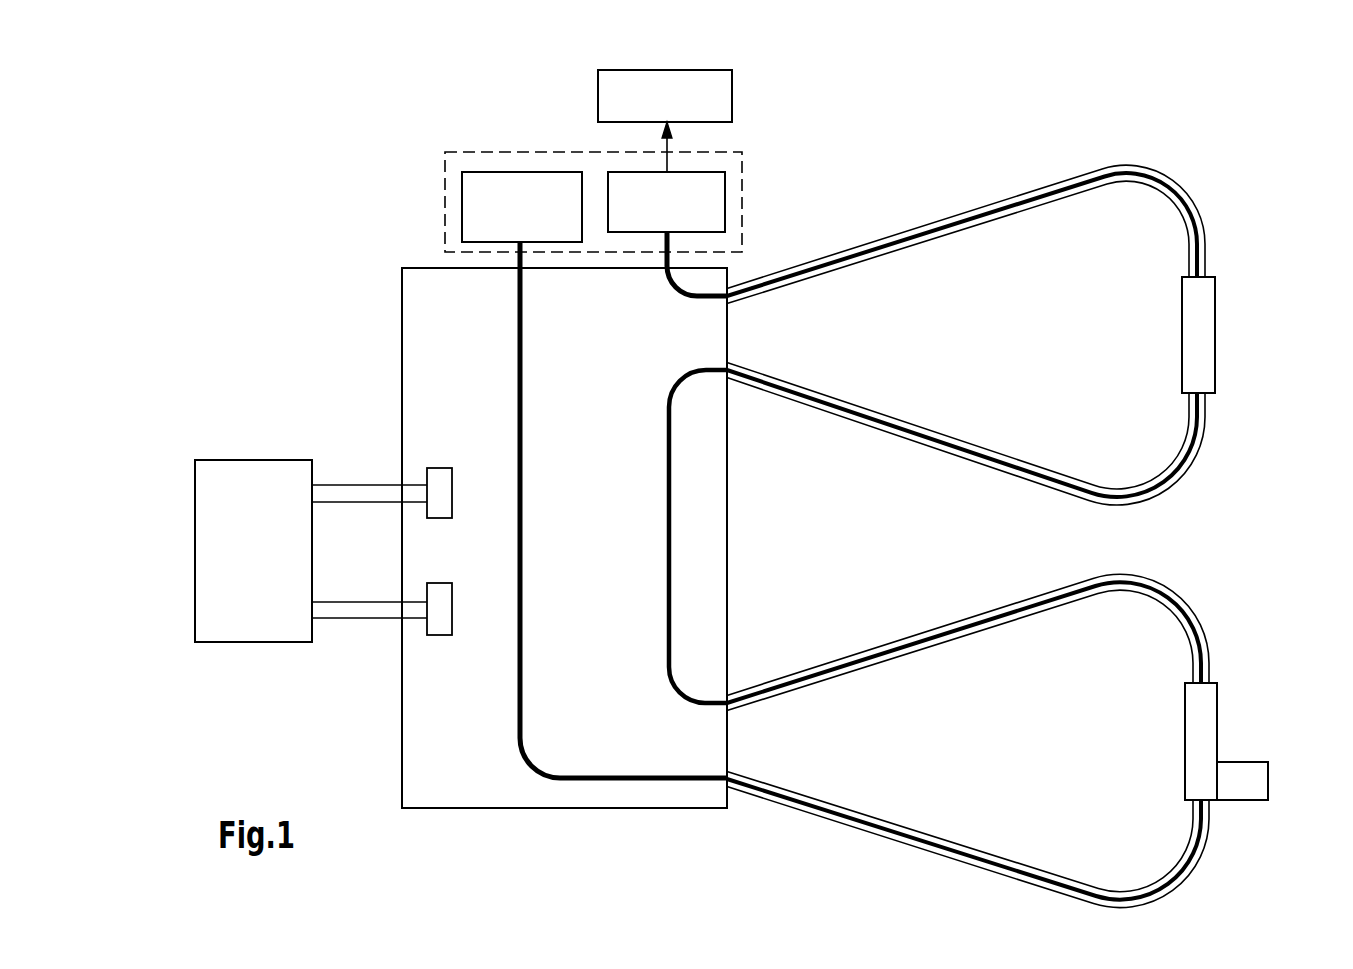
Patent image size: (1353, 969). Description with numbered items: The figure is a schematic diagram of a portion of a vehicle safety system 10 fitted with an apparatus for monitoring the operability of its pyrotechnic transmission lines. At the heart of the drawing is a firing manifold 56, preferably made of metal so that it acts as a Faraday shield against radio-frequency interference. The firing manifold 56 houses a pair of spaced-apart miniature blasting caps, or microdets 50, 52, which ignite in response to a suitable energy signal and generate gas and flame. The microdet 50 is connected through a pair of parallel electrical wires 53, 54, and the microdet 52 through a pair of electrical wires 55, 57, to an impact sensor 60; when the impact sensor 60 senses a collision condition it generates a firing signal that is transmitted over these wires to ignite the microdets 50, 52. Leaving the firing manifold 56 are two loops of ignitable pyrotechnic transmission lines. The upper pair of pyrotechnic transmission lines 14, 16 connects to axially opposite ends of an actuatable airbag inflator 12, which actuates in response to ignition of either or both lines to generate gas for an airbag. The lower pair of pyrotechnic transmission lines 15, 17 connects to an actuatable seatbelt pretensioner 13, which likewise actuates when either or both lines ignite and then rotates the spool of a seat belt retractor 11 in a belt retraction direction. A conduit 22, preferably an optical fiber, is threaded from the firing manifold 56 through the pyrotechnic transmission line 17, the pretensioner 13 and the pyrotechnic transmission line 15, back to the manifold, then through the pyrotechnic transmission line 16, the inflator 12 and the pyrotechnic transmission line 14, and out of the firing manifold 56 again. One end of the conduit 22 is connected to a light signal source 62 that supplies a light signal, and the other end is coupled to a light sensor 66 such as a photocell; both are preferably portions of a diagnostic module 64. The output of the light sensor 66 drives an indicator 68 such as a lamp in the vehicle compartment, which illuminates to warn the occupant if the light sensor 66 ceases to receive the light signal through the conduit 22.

The vehicle safety system 10 is at (888, 150).
The seat belt retractor 11 is at (1247, 787).
The airbag inflator 12 is at (1205, 333).
The seatbelt pretensioner 13 is at (1207, 715).
The pyrotechnic transmission line 14 is at (915, 225).
The pyrotechnic transmission line 15 is at (865, 648).
The pyrotechnic transmission line 16 is at (922, 423).
The pyrotechnic transmission line 17 is at (903, 823).
The conduit 22 is at (731, 296).
The microdet 50 is at (437, 482).
The microdet 52 is at (442, 619).
The electrical wire 53 is at (362, 483).
The electrical wire 54 is at (335, 503).
The electrical wire 55 is at (335, 600).
The firing manifold 56 is at (447, 810).
The electrical wire 57 is at (368, 620).
The impact sensor 60 is at (248, 610).
The light signal source 62 is at (508, 173).
The diagnostic module 64 is at (716, 150).
The light sensor 66 is at (618, 180).
The indicator 68 is at (707, 78).